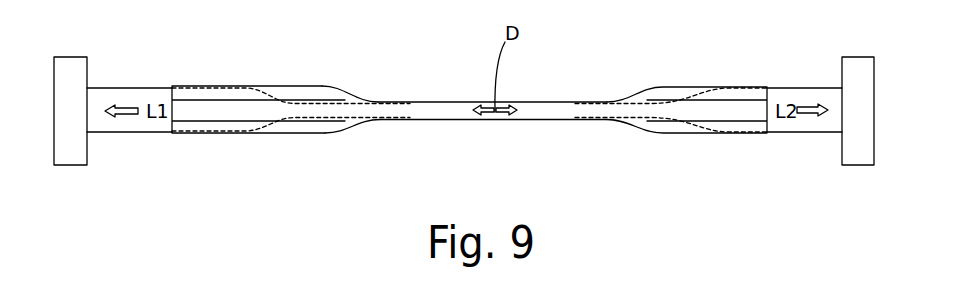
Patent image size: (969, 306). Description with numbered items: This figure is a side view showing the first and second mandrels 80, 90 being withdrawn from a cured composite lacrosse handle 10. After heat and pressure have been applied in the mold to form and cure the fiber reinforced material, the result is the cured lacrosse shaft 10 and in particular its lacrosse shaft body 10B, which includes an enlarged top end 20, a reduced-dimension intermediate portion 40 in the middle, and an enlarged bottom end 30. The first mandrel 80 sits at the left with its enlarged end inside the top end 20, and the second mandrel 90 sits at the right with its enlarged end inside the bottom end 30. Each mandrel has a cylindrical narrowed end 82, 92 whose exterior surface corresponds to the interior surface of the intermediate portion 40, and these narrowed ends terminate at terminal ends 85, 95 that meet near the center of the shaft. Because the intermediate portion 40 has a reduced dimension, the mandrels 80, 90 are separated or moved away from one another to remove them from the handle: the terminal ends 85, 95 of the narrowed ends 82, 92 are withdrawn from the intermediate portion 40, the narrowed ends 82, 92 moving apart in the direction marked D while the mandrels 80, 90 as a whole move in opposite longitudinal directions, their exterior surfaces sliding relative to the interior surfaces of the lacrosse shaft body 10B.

The composite lacrosse handle 10 is at (263, 58).
The lacrosse shaft body 10B is at (322, 85).
The top end 20 is at (287, 134).
The bottom end 30 is at (688, 135).
The intermediate portion 40 is at (502, 120).
The first mandrel 80 is at (72, 166).
The narrowed end 82 is at (472, 102).
The terminal end 85 is at (409, 107).
The second mandrel 90 is at (856, 166).
The narrowed end 92 is at (512, 102).
The terminal end 95 is at (574, 118).